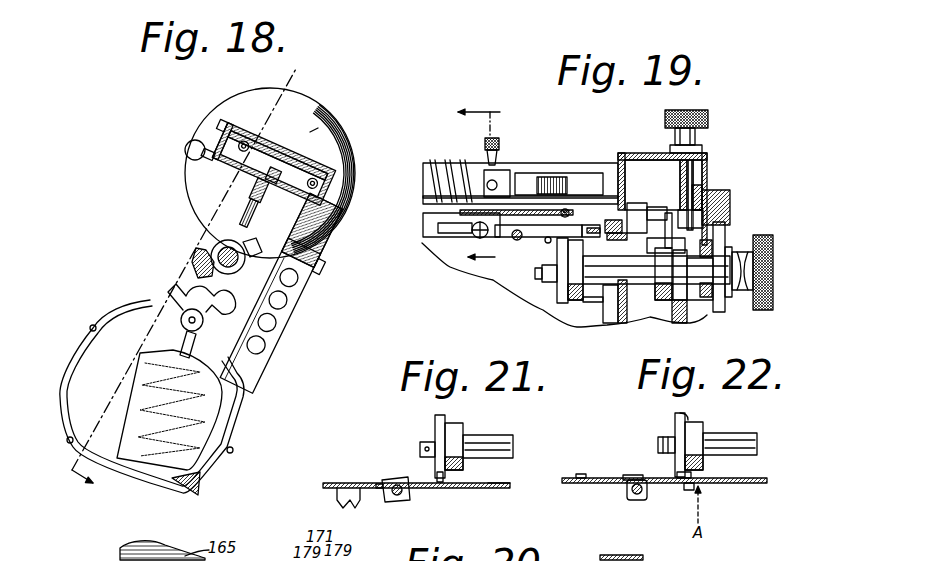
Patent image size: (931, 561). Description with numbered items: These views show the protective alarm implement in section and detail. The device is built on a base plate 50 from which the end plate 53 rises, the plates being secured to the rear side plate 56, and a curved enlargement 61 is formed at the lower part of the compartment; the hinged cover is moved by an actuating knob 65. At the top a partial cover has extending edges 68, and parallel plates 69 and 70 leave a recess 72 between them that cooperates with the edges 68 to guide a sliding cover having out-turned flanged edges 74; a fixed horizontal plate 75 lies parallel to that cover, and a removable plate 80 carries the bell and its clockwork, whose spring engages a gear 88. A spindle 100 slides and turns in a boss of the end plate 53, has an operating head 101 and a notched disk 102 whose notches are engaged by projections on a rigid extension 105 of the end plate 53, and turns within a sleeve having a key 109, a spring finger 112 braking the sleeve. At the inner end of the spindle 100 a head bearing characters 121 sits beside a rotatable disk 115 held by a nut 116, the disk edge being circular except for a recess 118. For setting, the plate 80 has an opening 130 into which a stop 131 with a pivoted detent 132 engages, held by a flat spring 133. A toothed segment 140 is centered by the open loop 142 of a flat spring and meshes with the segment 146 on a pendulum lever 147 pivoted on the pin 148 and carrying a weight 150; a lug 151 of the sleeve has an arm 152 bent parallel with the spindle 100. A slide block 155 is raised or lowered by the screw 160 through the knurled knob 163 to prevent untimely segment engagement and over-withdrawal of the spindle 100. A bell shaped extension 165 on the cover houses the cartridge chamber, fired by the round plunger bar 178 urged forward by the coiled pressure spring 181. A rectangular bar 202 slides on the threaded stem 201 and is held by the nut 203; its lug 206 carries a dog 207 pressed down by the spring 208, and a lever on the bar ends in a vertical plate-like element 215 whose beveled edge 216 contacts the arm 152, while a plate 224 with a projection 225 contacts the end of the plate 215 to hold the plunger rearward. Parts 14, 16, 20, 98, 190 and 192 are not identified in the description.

In FIG. 18, the frame 14 is at (228, 152).
In FIG. 19, the carriage 16 is at (489, 182).
In FIG. 18, the casing 20 is at (326, 80).
In FIG. 18, the base plate 50 is at (68, 440).
In FIG. 19, the end plate 53 is at (708, 176).
In FIG. 18, the rear side plate 56 is at (294, 316).
In FIG. 18, the curved enlargement 61 is at (90, 327).
In FIG. 18, the actuating knob 65 is at (186, 152).
In FIG. 18, the extending edges 68 is at (232, 450).
In FIG. 18, the parallel plate 69 is at (333, 153).
In FIG. 19, the parallel plate 69 is at (628, 153).
In FIG. 18, the parallel plate 70 is at (340, 193).
In FIG. 19, the parallel plate 70 is at (650, 168).
In FIG. 18, the recess 72 is at (330, 172).
In FIG. 19, the recess 72 is at (620, 156).
In FIG. 18, the out-turned flanged edges 74 is at (224, 122).
In FIG. 18, the fixed horizontal plate 75 is at (320, 232).
In FIG. 18, the removable plate 80 is at (71, 480).
In FIG. 21, the gear 88 is at (493, 489).
In FIG. 18, the slotted bar 98 is at (285, 300).
In FIG. 19, the spindle 100 is at (712, 305).
In FIG. 21, the spindle 100 is at (513, 451).
In FIG. 22, the spindle 100 is at (757, 454).
In FIG. 19, the operating head 101 is at (773, 258).
In FIG. 19, the notched disk 102 is at (729, 252).
In FIG. 19, the rigid extension 105 is at (732, 202).
In FIG. 21, the key 109 is at (497, 440).
In FIG. 22, the key 109 is at (757, 440).
In FIG. 22, the spring finger 112 is at (688, 418).
In FIG. 19, the rotatable disk 115 is at (572, 242).
In FIG. 22, the rotatable disk 115 is at (675, 424).
In FIG. 19, the nut 116 is at (560, 290).
In FIG. 21, the recess 118 is at (417, 446).
In FIG. 19, the characters 121 is at (575, 300).
In FIG. 21, the characters 121 is at (453, 432).
In FIG. 22, the characters 121 is at (705, 436).
In FIG. 21, the opening 130 is at (461, 489).
In FIG. 21, the stop 131 is at (345, 506).
In FIG. 21, the pivoted detent 132 is at (394, 504).
In FIG. 22, the pivoted detent 132 is at (680, 498).
In FIG. 21, the flat spring 133 is at (379, 484).
In FIG. 22, the flat spring 133 is at (632, 478).
In FIG. 18, the toothed segment 140 is at (212, 260).
In FIG. 19, the toothed segment 140 is at (664, 300).
In FIG. 19, the open loop 142 is at (610, 292).
In FIG. 18, the segment 146 is at (190, 283).
In FIG. 19, the segment 146 is at (693, 272).
In FIG. 18, the pendulum lever 147 is at (195, 345).
In FIG. 18, the pin 148 is at (190, 320).
In FIG. 18, the weight 150 is at (200, 402).
In FIG. 18, the lug 151 is at (305, 268).
In FIG. 18, the arm 152 is at (247, 257).
In FIG. 19, the arm 152 is at (660, 236).
In FIG. 19, the slide block 155 is at (705, 240).
In FIG. 19, the screw 160 is at (708, 157).
In FIG. 19, the knurled operating knob 163 is at (708, 118).
In FIG. 18, the bell shaped extension 165 is at (310, 132).
In FIG. 19, the round plunger bar 178 is at (423, 181).
In FIG. 19, the coiled pressure spring 181 is at (437, 180).
In FIG. 19, the screw head 190 is at (487, 142).
In FIG. 19, the screw 192 is at (498, 162).
In FIG. 19, the threaded stem 201 is at (512, 240).
In FIG. 19, the rectangular bar 202 is at (440, 240).
In FIG. 19, the nut 203 is at (478, 237).
In FIG. 19, the lug 206 is at (528, 272).
In FIG. 19, the dog 207 is at (546, 243).
In FIG. 18, the spring 208 is at (196, 250).
In FIG. 18, the vertical plate-like element 215 is at (258, 211).
In FIG. 18, the beveled edge 216 is at (318, 248).
In FIG. 18, the plate 224 is at (265, 181).
In FIG. 18, the projection 225 is at (243, 198).